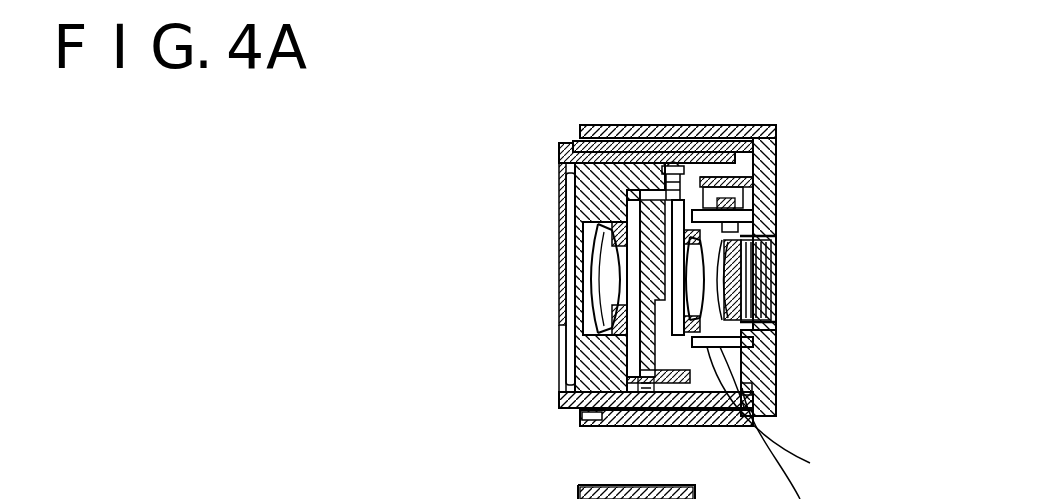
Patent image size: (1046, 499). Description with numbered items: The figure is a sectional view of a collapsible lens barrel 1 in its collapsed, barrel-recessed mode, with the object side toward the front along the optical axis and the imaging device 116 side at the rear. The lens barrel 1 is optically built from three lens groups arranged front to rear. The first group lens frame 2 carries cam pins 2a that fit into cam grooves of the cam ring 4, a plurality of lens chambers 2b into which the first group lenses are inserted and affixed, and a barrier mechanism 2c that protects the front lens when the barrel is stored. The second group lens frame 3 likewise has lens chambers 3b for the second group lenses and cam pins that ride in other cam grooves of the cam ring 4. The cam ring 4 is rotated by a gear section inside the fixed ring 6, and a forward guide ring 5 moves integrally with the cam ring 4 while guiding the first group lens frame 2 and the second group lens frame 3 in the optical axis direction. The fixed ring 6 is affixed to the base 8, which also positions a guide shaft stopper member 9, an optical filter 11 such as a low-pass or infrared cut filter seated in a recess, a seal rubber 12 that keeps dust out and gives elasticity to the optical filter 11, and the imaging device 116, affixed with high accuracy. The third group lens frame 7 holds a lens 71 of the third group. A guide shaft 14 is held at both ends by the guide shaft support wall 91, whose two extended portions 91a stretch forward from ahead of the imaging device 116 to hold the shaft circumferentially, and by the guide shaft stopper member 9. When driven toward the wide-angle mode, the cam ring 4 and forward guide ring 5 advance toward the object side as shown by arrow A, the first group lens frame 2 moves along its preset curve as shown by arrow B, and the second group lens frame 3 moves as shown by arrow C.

The lens barrel 1 is at (552, 133).
The first group lens frame 2 is at (563, 363).
The cam pins 2a is at (668, 125).
The lens chambers 2b is at (565, 340).
The barrier mechanism 2c is at (567, 300).
The second group lens frame 3 is at (631, 125).
The lens chambers 3b is at (693, 125).
The cam ring 4 is at (578, 150).
The forward guide ring 5 is at (601, 125).
The fixed ring 6 is at (713, 125).
The third group lens frame 7 is at (776, 208).
The base 8 is at (774, 182).
The guide shaft stopper member 9 is at (778, 218).
The optical filter 11 is at (778, 372).
The seal rubber 12 is at (778, 333).
The guide shaft 14 is at (777, 163).
The lens 71 is at (837, 455).
The guide shaft support wall 91 is at (746, 125).
The extended portions 91a is at (724, 125).
The imaging device 116 is at (778, 300).
The arrow A is at (557, 422).
The arrow B is at (557, 411).
The arrow C is at (633, 433).